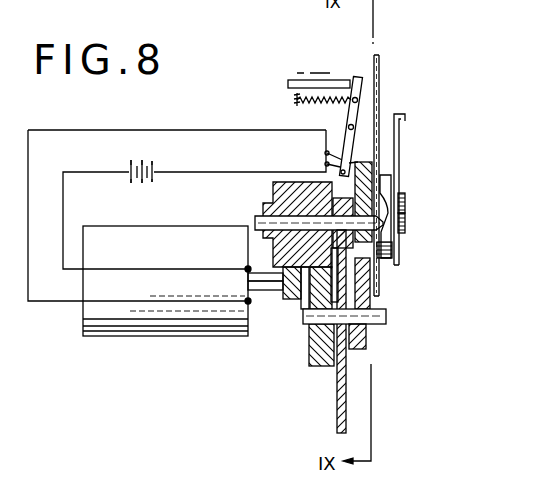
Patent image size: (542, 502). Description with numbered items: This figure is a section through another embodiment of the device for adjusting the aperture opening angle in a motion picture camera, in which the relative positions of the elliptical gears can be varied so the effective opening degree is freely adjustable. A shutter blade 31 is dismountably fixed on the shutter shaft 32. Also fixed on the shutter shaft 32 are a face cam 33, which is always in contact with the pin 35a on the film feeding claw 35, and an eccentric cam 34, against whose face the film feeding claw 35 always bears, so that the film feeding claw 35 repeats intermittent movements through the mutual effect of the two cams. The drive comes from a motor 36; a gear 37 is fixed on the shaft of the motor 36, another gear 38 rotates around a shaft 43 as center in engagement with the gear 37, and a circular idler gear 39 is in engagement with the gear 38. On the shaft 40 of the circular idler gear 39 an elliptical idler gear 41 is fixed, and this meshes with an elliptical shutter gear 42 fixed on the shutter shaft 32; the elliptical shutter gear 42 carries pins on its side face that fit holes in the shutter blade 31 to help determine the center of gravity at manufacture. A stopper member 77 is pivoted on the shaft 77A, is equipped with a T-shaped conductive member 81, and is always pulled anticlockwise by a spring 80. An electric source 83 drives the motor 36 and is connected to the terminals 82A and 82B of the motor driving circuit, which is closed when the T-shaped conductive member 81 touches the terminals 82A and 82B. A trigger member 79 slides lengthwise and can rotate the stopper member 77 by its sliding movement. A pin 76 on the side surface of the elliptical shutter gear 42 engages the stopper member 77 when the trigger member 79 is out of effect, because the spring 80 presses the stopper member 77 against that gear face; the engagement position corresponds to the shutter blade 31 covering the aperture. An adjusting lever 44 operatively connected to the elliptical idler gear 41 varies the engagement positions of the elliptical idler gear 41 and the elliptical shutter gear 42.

The shutter blade 31 is at (380, 60).
The shutter shaft 32 is at (378, 245).
The face cam 33 is at (393, 261).
The eccentric cam 34 is at (405, 199).
The film feeding claw 35 is at (404, 123).
The pin 35a is at (405, 205).
The motor 36 is at (157, 318).
The gear 37 is at (286, 296).
The gear 38 is at (270, 185).
The circular idler gear 39 is at (309, 351).
The shaft 40 is at (384, 326).
The elliptical idler gear 41 is at (365, 338).
The elliptical shutter gear 42 is at (360, 158).
The shaft 43 is at (255, 222).
The adjusting lever 44 is at (336, 386).
The pin 76 is at (381, 190).
The stopper member 77 is at (363, 84).
The shaft 77A is at (350, 127).
The trigger member 79 is at (336, 86).
The spring 80 is at (297, 103).
The T-shaped conductive member 81 is at (356, 163).
The terminal 82A is at (326, 153).
The terminal 82B is at (325, 165).
The electric source 83 is at (143, 162).